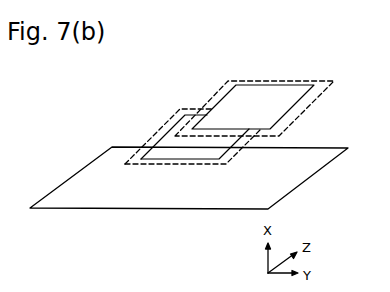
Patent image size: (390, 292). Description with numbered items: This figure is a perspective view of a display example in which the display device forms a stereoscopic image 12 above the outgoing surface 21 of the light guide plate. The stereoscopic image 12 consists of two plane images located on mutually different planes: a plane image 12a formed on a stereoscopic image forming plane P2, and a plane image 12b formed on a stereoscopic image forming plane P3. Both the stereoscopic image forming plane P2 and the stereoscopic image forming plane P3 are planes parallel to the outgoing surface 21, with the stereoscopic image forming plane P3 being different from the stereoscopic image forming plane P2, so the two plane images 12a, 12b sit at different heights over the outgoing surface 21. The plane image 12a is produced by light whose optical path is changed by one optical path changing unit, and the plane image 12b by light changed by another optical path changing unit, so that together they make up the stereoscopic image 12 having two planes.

The stereoscopic image 12 is at (202, 57).
The plane image 12a is at (170, 132).
The plane image 12b is at (226, 103).
The stereoscopic image forming plane P2 is at (156, 134).
The stereoscopic image forming plane P3 is at (277, 80).
The outgoing surface 21 is at (202, 199).